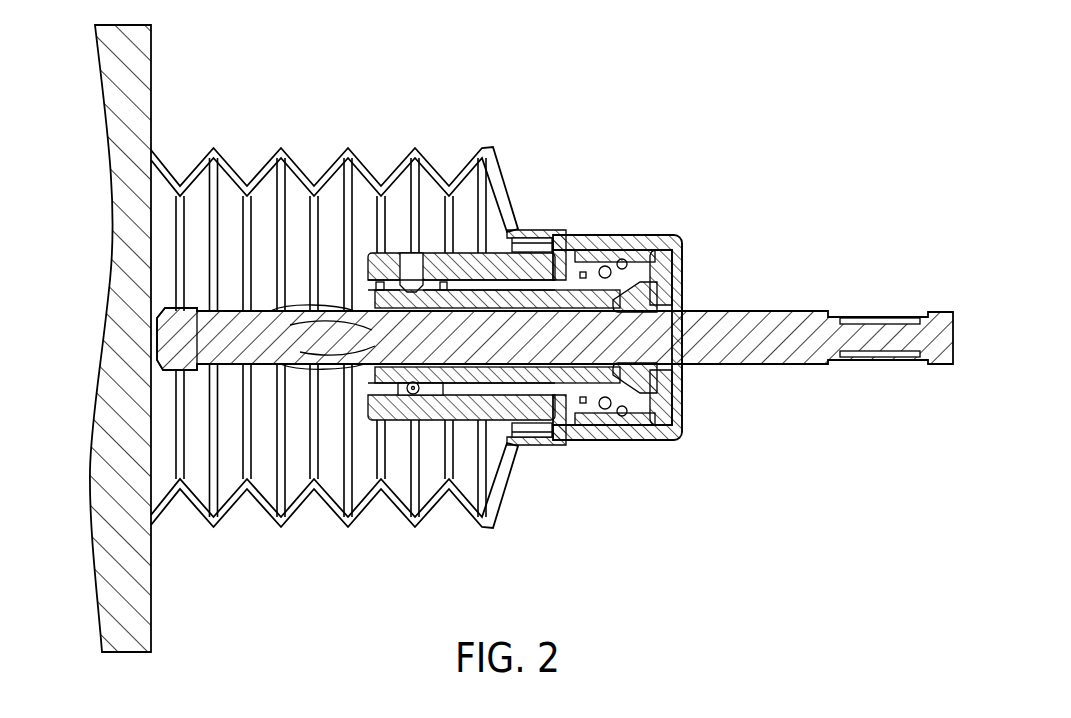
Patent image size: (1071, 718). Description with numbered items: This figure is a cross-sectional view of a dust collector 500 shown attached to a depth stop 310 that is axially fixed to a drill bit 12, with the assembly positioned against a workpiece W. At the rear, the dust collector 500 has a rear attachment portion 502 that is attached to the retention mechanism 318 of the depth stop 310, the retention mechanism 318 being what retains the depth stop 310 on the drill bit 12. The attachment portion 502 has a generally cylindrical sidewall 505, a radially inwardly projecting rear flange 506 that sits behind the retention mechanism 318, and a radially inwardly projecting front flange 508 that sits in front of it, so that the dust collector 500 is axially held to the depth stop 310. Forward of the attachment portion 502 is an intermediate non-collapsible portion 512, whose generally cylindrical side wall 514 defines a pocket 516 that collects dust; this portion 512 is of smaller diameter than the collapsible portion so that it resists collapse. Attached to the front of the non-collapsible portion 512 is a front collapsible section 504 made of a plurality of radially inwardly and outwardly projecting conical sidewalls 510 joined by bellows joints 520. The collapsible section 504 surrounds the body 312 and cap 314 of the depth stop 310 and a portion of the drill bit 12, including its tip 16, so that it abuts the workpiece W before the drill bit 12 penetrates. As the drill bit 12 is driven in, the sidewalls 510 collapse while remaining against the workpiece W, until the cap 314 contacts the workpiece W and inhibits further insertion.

The workpiece W is at (120, 258).
The drill bit 12 is at (792, 352).
The tip 16 is at (170, 323).
The dust collector 500 is at (207, 112).
The front collapsible section 504 is at (334, 366).
The bellows joints 520 is at (181, 498).
The conical sidewalls 510 is at (682, 252).
The cap 314 is at (497, 262).
The body 312 is at (540, 442).
The depth stop 310 is at (540, 430).
The intermediate non-collapsible portion 512 is at (550, 233).
The cylindrical side wall 514 is at (540, 234).
The pocket 516 is at (556, 250).
The rear attachment portion 502 is at (494, 389).
The front flange 508 is at (581, 236).
The cylindrical sidewall 505 is at (613, 237).
The retention mechanism 318 is at (652, 248).
The rear flange 506 is at (680, 238).